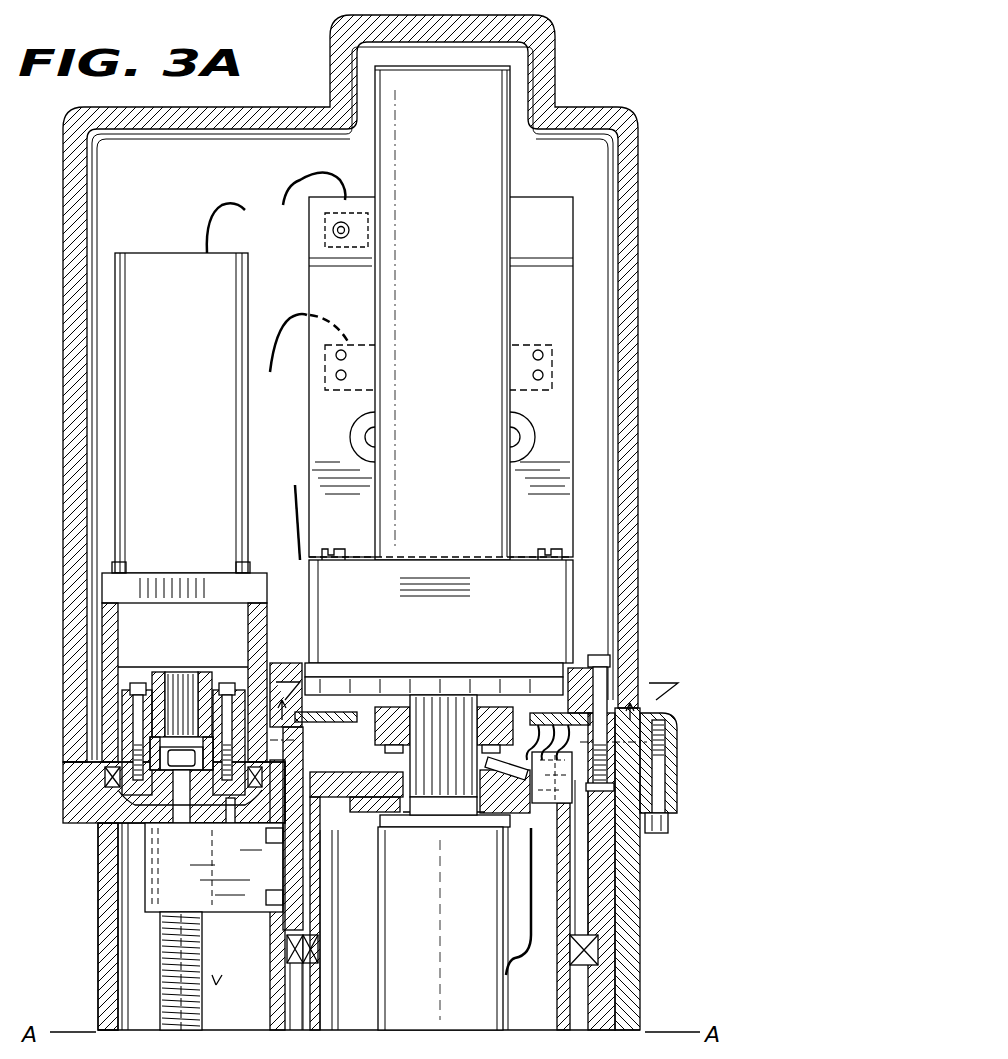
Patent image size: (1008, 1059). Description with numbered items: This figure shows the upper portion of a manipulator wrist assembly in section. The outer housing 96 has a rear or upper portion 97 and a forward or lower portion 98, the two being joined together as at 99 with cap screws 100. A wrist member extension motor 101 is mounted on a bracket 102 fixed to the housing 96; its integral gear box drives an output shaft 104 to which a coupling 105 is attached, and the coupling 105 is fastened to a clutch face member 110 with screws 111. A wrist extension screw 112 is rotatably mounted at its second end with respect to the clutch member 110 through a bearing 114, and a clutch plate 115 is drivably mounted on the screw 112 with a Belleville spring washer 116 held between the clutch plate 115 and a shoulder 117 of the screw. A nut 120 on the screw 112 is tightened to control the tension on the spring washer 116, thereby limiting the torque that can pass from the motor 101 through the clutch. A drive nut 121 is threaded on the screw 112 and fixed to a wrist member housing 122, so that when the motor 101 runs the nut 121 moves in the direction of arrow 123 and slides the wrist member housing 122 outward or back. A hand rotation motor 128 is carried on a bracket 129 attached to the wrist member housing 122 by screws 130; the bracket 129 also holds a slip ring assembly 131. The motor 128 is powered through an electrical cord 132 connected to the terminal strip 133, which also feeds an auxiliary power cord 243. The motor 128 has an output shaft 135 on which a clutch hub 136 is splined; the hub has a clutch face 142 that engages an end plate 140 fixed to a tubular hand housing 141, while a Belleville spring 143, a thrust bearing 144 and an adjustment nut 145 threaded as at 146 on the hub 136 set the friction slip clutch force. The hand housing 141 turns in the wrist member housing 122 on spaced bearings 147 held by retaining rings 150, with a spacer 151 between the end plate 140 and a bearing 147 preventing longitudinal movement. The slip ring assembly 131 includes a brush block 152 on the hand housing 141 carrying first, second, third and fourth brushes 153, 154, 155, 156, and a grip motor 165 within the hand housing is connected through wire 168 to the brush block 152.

The rear or upper portion 97 is at (63, 608).
The outer housing 96 is at (75, 790).
The forward or lower portion 98 is at (640, 968).
The joint of housing portions 99 is at (677, 760).
The cap screws 100 is at (662, 833).
The wrist member extension motor 101 is at (196, 311).
The bracket 102 is at (100, 680).
The output shaft 104 is at (184, 745).
The coupling 105 is at (162, 700).
The clutch face member 110 is at (120, 798).
The screws 111 is at (140, 683).
The wrist extension screw 112 is at (160, 990).
The bearing 114 is at (170, 865).
The clutch plate 115 is at (230, 818).
The Belleville spring washer 116 is at (115, 833).
The shoulder 117 is at (195, 818).
The nut 120 is at (220, 683).
The drive nut 121 is at (148, 900).
The wrist member housing 122 is at (282, 1018).
The arrow 123 is at (216, 985).
The hand rotation motor 128 is at (520, 497).
The bracket 129 is at (330, 660).
The screws 130 is at (607, 655).
The slip ring assembly 131 is at (313, 688).
The electrical cord 132 is at (290, 190).
The terminal strip 133 is at (547, 345).
The output shaft 135 is at (442, 710).
The clutch hub 136 is at (365, 820).
The end plate 140 is at (332, 785).
The hand housing 141 is at (328, 1008).
The clutch face 142 is at (372, 800).
The Belleville spring 143 is at (523, 797).
The thrust bearing 144 is at (422, 800).
The adjustment nut 145 is at (380, 710).
The threaded mounting 146 is at (470, 705).
The bearings 147 is at (312, 965).
The retaining rings 150 is at (290, 965).
The spacer 151 is at (317, 920).
The brush block 152 is at (505, 852).
The first brush 153 is at (597, 693).
The second brush 154 is at (572, 707).
The third brush 155 is at (540, 712).
The fourth brush 156 is at (540, 712).
The grip motor 165 is at (483, 1021).
The wire 168 is at (507, 983).
The auxiliary power cord 243 is at (302, 303).